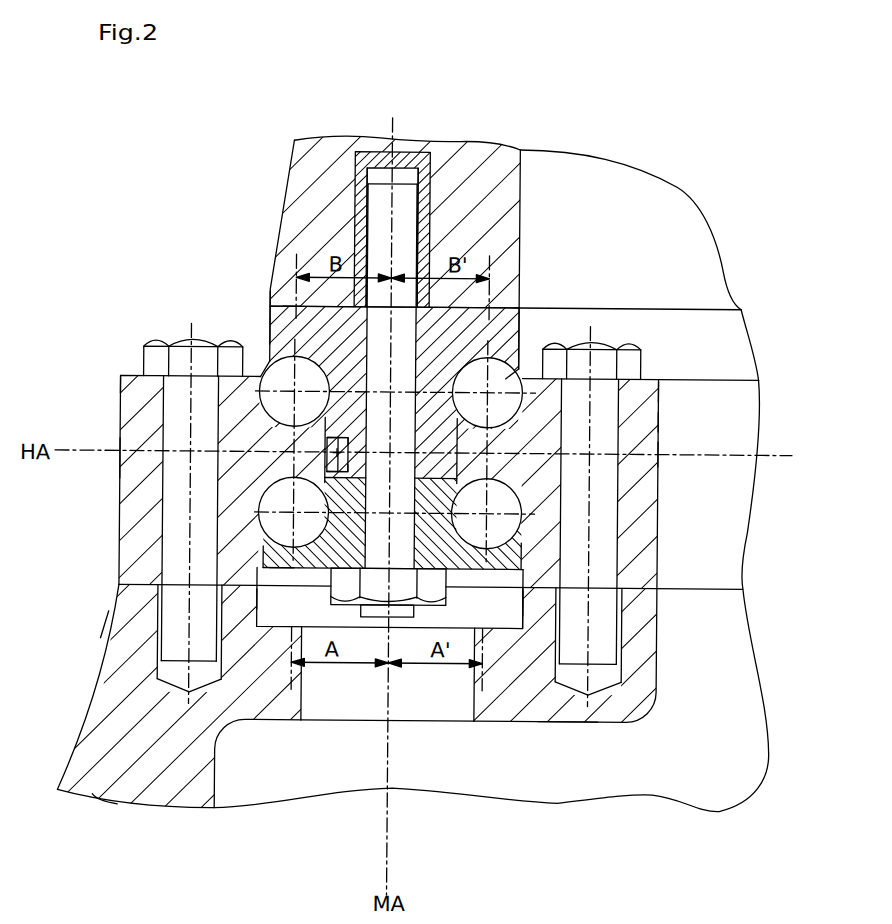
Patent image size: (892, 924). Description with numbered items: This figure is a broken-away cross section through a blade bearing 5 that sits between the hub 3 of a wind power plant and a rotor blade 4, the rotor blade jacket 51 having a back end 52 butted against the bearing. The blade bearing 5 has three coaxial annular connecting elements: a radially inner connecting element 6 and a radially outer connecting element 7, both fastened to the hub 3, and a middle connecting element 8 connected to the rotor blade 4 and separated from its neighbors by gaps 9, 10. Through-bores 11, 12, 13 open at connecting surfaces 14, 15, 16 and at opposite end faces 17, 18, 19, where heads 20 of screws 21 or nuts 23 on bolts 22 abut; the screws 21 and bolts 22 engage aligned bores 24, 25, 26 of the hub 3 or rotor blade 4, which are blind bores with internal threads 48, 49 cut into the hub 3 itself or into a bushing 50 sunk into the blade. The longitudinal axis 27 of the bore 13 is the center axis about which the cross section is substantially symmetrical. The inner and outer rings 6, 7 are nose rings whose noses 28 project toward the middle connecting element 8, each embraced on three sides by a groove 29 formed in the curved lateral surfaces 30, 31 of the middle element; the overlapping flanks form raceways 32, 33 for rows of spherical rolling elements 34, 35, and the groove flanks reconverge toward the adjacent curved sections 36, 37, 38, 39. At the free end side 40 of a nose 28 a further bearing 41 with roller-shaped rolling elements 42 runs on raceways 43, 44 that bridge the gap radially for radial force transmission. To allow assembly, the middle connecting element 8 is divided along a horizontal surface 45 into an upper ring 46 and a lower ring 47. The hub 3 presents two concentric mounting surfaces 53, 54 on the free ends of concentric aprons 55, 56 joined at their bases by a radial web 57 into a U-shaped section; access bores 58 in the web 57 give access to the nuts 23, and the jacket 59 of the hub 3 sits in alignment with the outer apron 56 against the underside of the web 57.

The hub 3 is at (160, 785).
The rotor blade 4 is at (468, 160).
The blade bearing 5 is at (110, 221).
The radially inner connecting element 6 is at (650, 476).
The radially outer connecting element 7 is at (145, 465).
The middle connecting element 8 is at (510, 325).
The gap 9 is at (520, 547).
The gap 10 is at (250, 540).
The bore 11 is at (652, 418).
The bore 12 is at (165, 390).
The bore 13 is at (285, 326).
The connecting surface 14 is at (645, 594).
The connecting surface 15 is at (116, 612).
The connecting surface 16 is at (518, 262).
The end face 17 is at (725, 377).
The end face 18 is at (125, 377).
The end face 19 is at (259, 590).
The head 20 is at (632, 354).
The screw 21 is at (642, 398).
The bolt 22 is at (398, 190).
The nut 23 is at (506, 600).
The bore 24 is at (621, 653).
The bore 25 is at (120, 654).
The bore 26 is at (356, 194).
The longitudinal axis 27 is at (398, 835).
The nose 28 is at (245, 442).
The groove 29 is at (225, 340).
The curved lateral surface 30 is at (505, 378).
The curved lateral surface 31 is at (271, 326).
The raceway 32 is at (262, 499).
The raceway 33 is at (265, 522).
The rolling elements 34 is at (612, 342).
The rolling elements 35 is at (536, 600).
The curved section 36 is at (522, 338).
The curved section 37 is at (265, 346).
The curved section 38 is at (523, 567).
The curved section 39 is at (257, 562).
The free end side 40 is at (346, 432).
The bearing 41 is at (349, 454).
The rolling elements 42 is at (350, 458).
The raceway 43 is at (282, 569).
The raceway 44 is at (350, 481).
The horizontal surface 45 is at (437, 498).
The upper ring 46 is at (268, 305).
The lower ring 47 is at (655, 450).
The internal thread 48 is at (621, 678).
The internal thread 49 is at (424, 190).
The bushing 50 is at (370, 160).
The rotor blade jacket 51 is at (328, 160).
The back end 52 is at (496, 230).
The mounting surface 53 is at (746, 563).
The mounting surface 54 is at (125, 588).
The apron 55 is at (640, 623).
The apron 56 is at (165, 642).
The radial web 57 is at (562, 700).
The access bore 58 is at (378, 700).
The jacket 59 is at (118, 704).